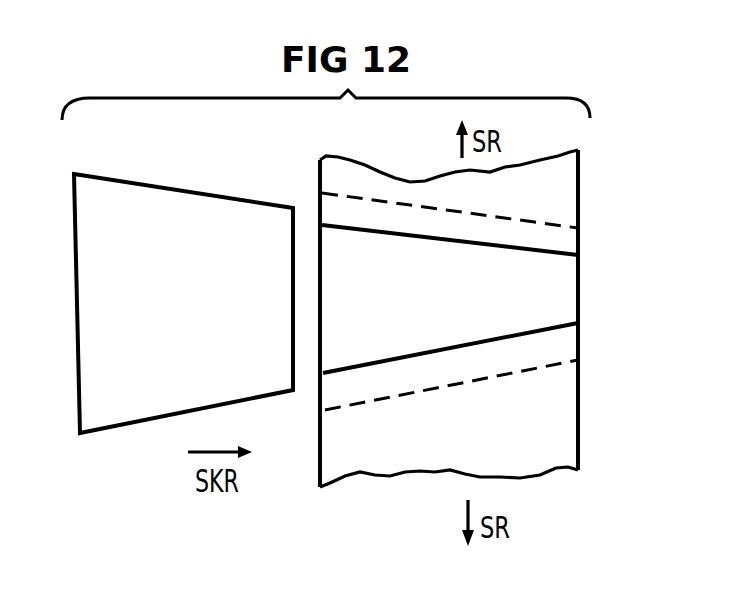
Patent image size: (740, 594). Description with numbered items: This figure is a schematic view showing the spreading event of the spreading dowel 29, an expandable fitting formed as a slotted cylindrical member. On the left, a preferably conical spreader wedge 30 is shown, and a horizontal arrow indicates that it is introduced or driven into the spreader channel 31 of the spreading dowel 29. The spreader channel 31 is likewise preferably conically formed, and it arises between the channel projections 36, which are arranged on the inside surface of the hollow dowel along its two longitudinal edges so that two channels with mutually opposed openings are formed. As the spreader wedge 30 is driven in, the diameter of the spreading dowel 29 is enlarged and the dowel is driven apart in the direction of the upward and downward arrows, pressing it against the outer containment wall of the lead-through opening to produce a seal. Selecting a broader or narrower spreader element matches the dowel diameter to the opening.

The spreading dowel 29 is at (488, 318).
The spreader wedge 30 is at (150, 198).
The spreader channel 31 is at (572, 290).
The channel projections 36 is at (463, 235).